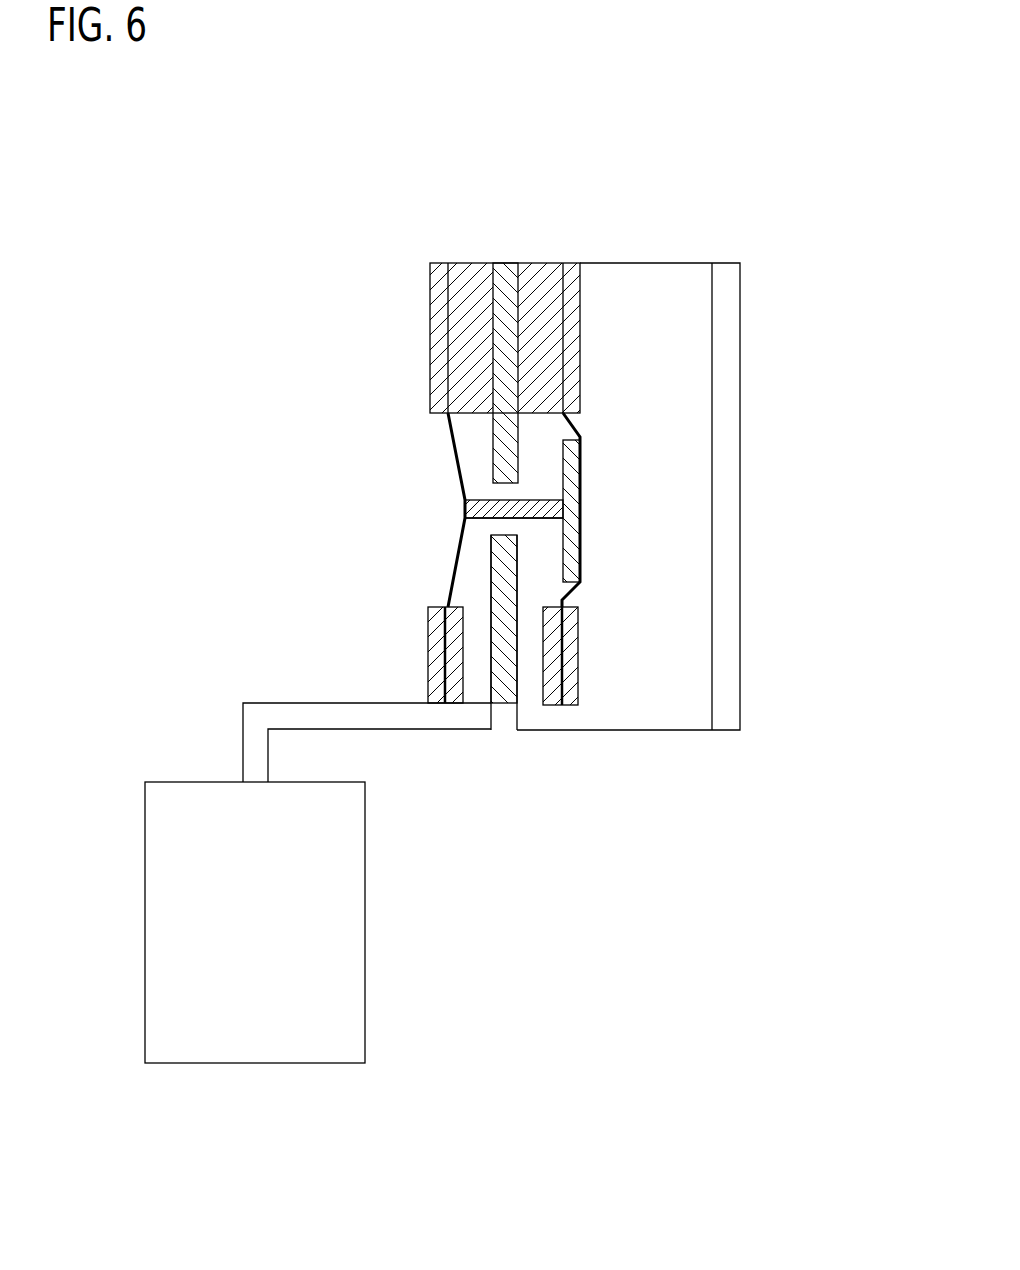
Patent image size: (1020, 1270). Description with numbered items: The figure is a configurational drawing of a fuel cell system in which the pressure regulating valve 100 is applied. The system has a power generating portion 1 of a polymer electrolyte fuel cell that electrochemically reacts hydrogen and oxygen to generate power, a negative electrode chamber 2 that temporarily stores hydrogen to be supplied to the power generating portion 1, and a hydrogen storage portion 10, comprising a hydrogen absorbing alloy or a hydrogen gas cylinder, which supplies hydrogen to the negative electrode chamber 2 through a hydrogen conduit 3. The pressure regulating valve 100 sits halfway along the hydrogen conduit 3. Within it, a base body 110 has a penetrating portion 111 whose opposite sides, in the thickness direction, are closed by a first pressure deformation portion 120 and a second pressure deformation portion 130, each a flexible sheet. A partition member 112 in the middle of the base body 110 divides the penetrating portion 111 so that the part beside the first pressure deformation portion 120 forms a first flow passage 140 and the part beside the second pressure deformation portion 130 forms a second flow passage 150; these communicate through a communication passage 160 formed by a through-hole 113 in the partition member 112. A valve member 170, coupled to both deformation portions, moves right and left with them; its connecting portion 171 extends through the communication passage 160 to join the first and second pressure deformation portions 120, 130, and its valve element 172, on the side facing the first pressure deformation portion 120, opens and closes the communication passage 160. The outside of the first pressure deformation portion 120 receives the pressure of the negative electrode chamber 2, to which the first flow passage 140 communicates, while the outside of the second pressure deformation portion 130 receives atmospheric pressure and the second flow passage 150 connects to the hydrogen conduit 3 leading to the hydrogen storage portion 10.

The power generating portion 1 is at (717, 507).
The negative electrode chamber 2 is at (673, 440).
The hydrogen conduit 3 is at (382, 720).
The hydrogen storage portion 10 is at (203, 1020).
The pressure regulating valve 100 is at (377, 411).
The base body 110 is at (428, 395).
The penetrating portion 111 is at (441, 541).
The partition member 112 is at (500, 470).
The through-hole 113 is at (573, 567).
The first pressure deformation portion 120 is at (573, 592).
The second pressure deformation portion 130 is at (447, 593).
The first flow passage 140 is at (541, 588).
The second flow passage 150 is at (478, 663).
The communication passage 160 is at (503, 497).
The valve member 170 is at (542, 453).
The connecting portion 171 is at (480, 513).
The valve element 172 is at (577, 522).